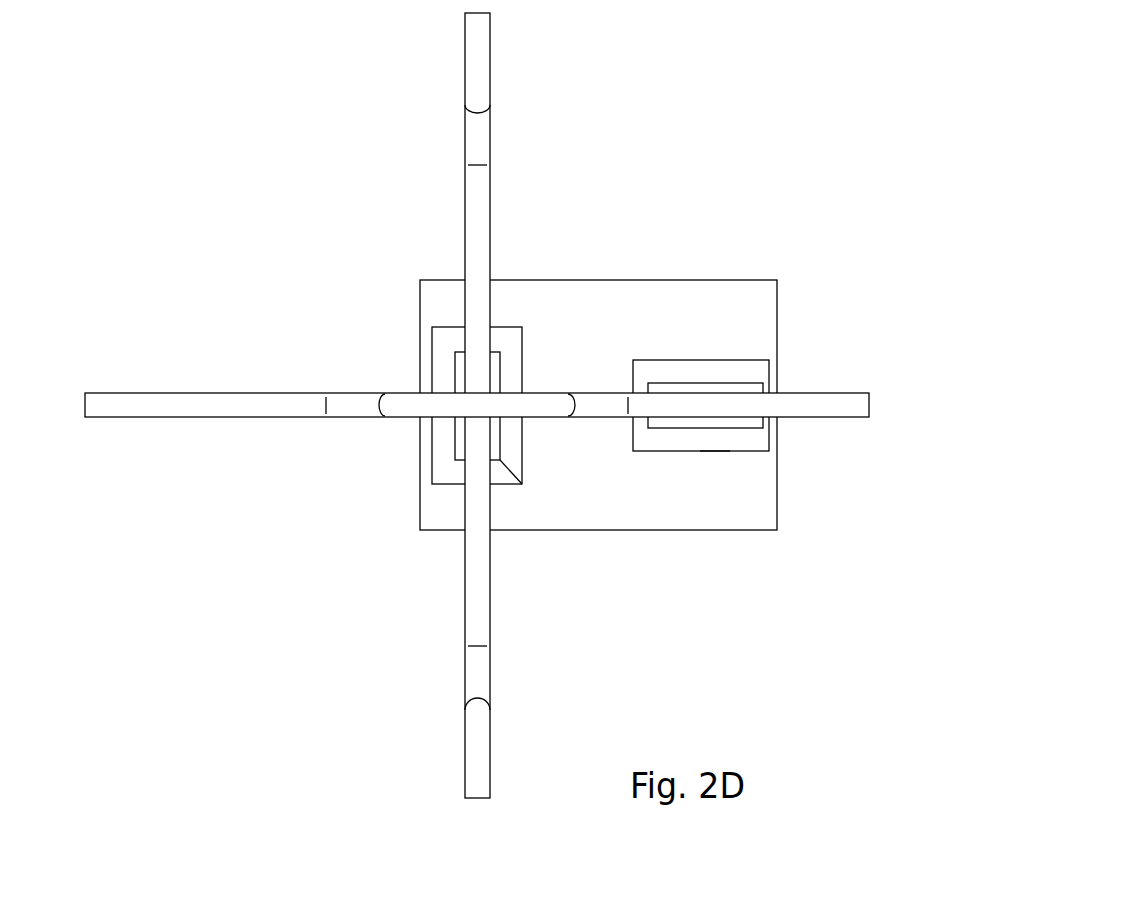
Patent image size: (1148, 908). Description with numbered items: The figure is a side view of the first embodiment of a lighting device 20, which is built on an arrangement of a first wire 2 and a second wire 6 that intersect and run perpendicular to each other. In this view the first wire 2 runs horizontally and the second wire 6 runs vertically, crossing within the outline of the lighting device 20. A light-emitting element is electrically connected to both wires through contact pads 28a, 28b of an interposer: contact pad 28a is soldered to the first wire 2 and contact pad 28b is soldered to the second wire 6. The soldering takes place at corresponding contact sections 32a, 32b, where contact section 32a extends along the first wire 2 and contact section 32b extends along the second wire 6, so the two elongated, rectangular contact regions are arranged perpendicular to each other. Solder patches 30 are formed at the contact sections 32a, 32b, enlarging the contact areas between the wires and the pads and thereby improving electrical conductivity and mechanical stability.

The first wire 2 is at (204, 406).
The second wire 6 is at (476, 211).
The lighting device 20 is at (836, 154).
The contact pad 28a is at (734, 373).
The contact pad 28b is at (446, 357).
The solder patch 30 is at (458, 437).
The contact section 32a is at (714, 455).
The contact section 32b is at (516, 482).